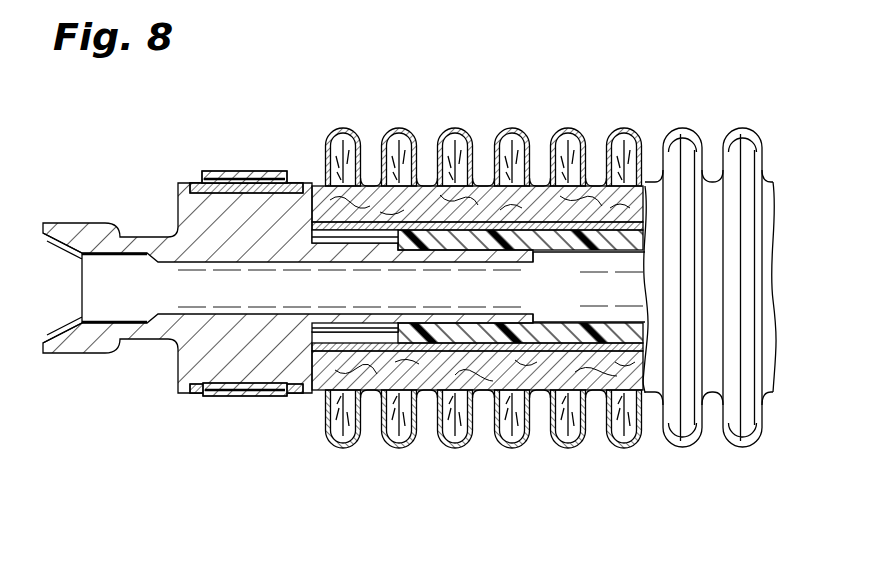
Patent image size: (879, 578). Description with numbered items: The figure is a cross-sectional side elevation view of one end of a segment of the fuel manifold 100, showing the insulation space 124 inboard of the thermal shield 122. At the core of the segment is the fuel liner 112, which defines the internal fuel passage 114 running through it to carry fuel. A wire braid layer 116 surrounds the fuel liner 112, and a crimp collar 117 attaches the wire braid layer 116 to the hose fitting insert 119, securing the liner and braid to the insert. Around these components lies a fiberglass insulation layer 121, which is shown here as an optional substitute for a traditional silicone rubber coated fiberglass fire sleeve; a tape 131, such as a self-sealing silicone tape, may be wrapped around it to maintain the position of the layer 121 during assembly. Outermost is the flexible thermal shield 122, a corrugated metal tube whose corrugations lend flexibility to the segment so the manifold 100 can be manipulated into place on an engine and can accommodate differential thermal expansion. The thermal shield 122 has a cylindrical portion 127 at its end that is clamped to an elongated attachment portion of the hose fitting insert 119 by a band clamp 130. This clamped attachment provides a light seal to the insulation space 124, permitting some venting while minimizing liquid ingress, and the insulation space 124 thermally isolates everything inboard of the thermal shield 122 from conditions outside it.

The manifold 100 is at (182, 117).
The fuel liner 112 is at (590, 240).
The fuel passage 114 is at (54, 303).
The wire braid layer 116 is at (482, 210).
The crimp collar 117 is at (316, 392).
The hose fitting insert 119 is at (115, 222).
The fiberglass insulation layer 121 is at (540, 397).
The thermal shield 122 is at (697, 118).
The insulation space 124 is at (398, 421).
The cylindrical portion 127 is at (190, 397).
The band clamp 130 is at (224, 170).
The tape 131 is at (368, 188).